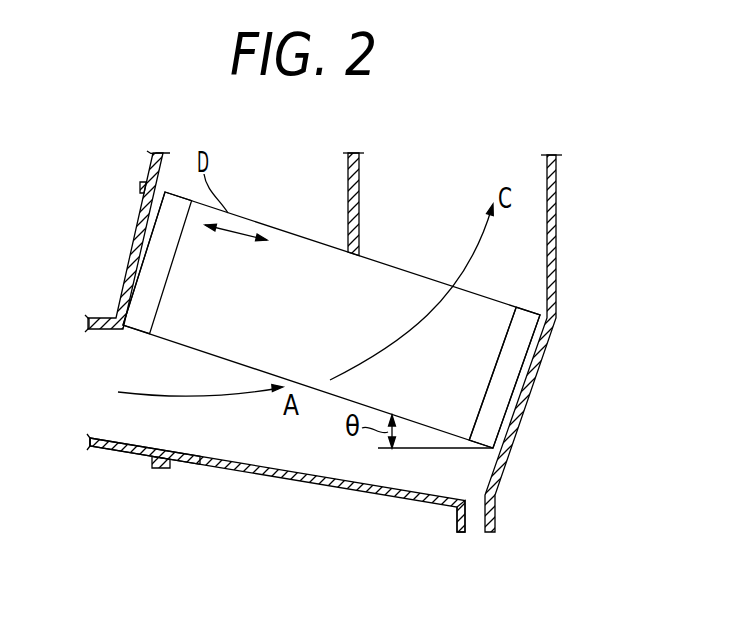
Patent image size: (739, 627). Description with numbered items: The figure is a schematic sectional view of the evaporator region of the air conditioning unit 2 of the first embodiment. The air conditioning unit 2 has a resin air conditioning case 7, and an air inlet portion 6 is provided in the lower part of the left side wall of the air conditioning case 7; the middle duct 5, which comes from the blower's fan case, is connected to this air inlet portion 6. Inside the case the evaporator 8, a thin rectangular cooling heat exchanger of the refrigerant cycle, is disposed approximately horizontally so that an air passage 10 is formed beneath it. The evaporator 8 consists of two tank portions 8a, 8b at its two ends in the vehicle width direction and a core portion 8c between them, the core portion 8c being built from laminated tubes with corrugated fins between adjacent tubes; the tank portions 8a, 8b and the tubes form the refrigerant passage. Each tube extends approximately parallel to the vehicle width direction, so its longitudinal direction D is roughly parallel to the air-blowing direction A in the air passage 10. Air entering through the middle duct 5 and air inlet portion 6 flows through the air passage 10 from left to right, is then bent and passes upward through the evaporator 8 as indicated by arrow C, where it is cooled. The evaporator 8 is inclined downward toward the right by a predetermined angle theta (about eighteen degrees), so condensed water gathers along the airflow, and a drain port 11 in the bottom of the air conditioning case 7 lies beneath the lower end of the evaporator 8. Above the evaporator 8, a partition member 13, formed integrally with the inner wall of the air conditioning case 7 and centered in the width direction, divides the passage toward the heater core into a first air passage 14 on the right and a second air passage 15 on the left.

The air conditioning unit 2 is at (560, 331).
The middle duct 5 is at (112, 450).
The air inlet portion 6 is at (175, 418).
The air conditioning case 7 is at (556, 242).
The evaporator 8 is at (490, 297).
The tank portion 8a is at (153, 262).
The tank portion 8b is at (498, 398).
The core portion 8c is at (475, 355).
The air passage 10 is at (238, 425).
The drain port 11 is at (473, 520).
The partition member 13 is at (358, 193).
The first air passage 14 is at (442, 196).
The second air passage 15 is at (245, 176).